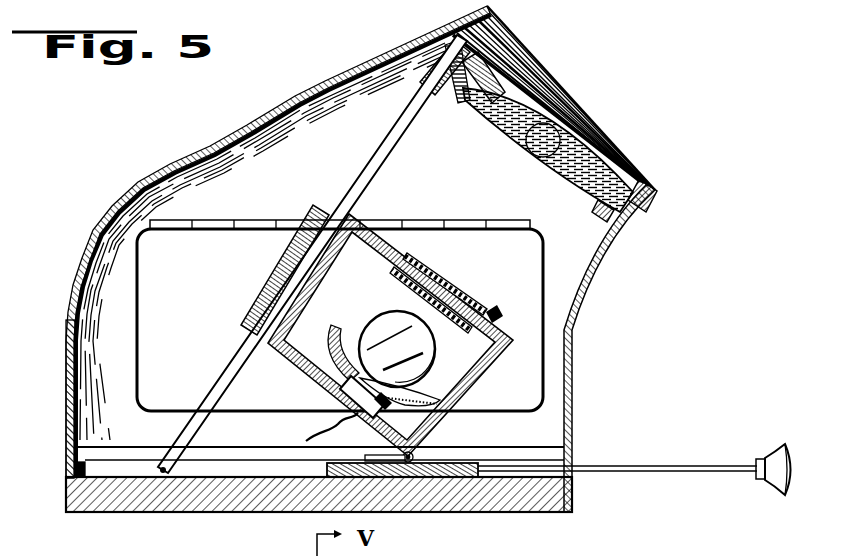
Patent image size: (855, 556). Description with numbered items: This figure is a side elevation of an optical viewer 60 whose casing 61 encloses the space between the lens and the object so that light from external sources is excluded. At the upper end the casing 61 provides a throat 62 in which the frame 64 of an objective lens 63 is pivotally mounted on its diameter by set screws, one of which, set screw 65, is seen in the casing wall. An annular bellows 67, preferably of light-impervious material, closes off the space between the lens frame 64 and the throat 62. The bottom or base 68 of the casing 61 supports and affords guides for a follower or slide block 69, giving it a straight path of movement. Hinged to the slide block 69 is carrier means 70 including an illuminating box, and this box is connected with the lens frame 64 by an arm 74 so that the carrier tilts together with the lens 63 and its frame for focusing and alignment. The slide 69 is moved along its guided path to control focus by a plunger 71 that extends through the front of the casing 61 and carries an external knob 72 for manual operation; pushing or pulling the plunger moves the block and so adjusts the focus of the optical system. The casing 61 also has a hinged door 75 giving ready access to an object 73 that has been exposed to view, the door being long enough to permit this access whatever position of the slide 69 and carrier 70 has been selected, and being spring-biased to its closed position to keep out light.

The optical viewer 60 is at (336, 72).
The casing 61 is at (238, 126).
The throat 62 is at (648, 205).
The objective lens 63 is at (502, 136).
The frame 64 is at (601, 206).
The set screw 65 is at (557, 170).
The annular bellows 67 is at (536, 64).
The base 68 is at (158, 513).
The slide block 69 is at (468, 461).
The carrier means 70 is at (245, 297).
The plunger 71 is at (660, 462).
The knob 72 is at (769, 446).
The object 73 is at (455, 282).
The arm 74 is at (372, 152).
The hinged door 75 is at (546, 300).